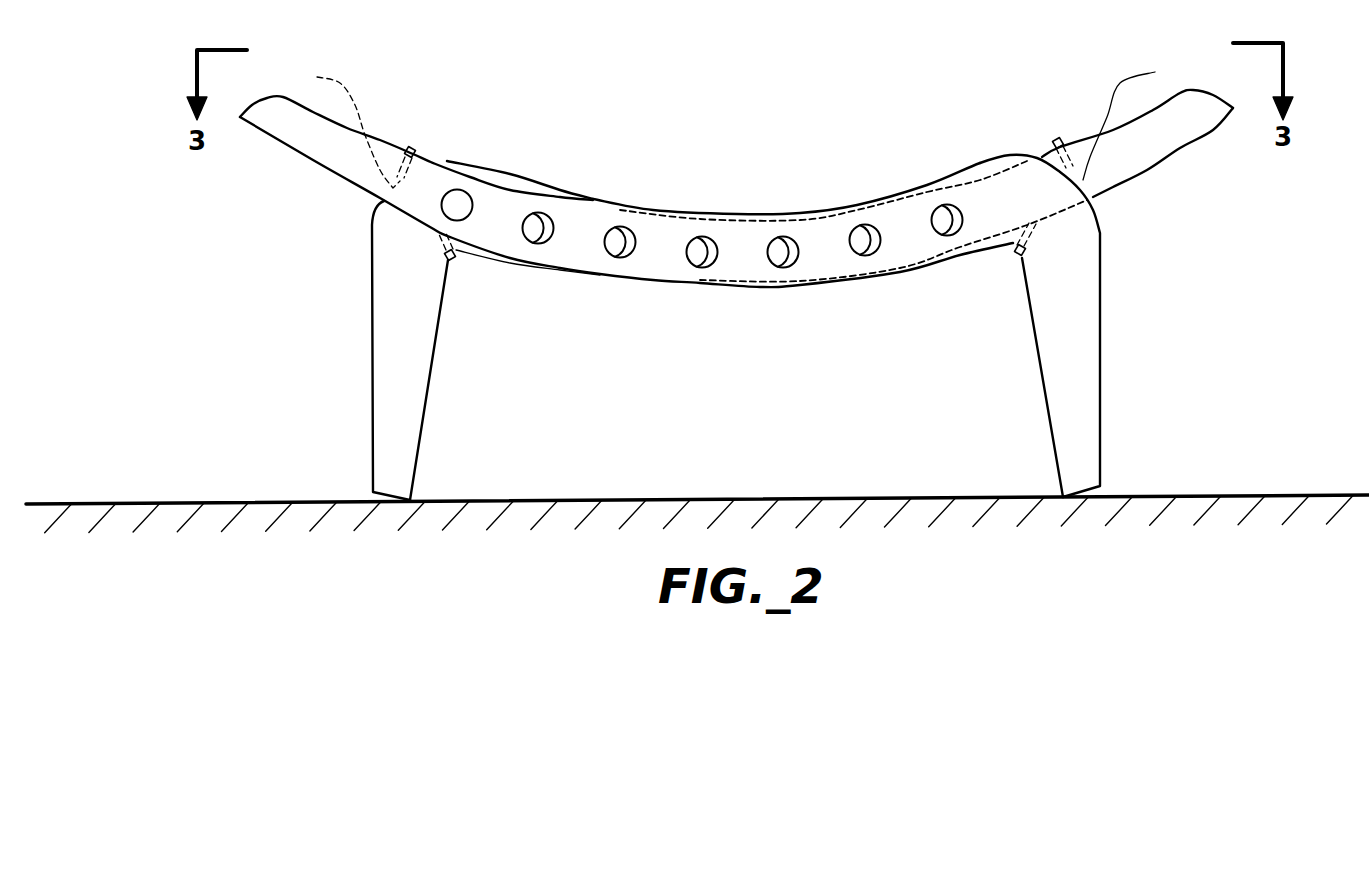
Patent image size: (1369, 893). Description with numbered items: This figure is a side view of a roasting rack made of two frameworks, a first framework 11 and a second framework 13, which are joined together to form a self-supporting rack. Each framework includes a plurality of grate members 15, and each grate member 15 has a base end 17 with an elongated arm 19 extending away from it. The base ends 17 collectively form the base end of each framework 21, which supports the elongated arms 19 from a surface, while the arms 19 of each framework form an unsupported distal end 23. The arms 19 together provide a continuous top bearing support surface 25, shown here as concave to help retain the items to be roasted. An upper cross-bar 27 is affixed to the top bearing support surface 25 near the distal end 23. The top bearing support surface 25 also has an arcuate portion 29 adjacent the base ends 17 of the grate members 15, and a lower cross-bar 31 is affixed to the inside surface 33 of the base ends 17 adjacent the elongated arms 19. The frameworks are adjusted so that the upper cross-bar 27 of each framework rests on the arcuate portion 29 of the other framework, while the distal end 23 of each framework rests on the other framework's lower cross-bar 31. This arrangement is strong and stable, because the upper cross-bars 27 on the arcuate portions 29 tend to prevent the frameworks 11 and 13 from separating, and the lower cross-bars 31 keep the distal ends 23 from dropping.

The first framework 11 is at (360, 321).
The second framework 13 is at (1114, 259).
The grate members 15 is at (931, 178).
The base end 17 is at (1087, 320).
The elongated arm 19 is at (577, 233).
The base end of each framework 21 is at (360, 427).
The unsupported distal end 23 is at (330, 157).
The top bearing support surface 25 is at (590, 197).
The upper cross-bar 27 is at (413, 146).
The arcuate portion 29 is at (737, 122).
The lower cross-bar 31 is at (452, 259).
The inside surface 33 is at (427, 393).